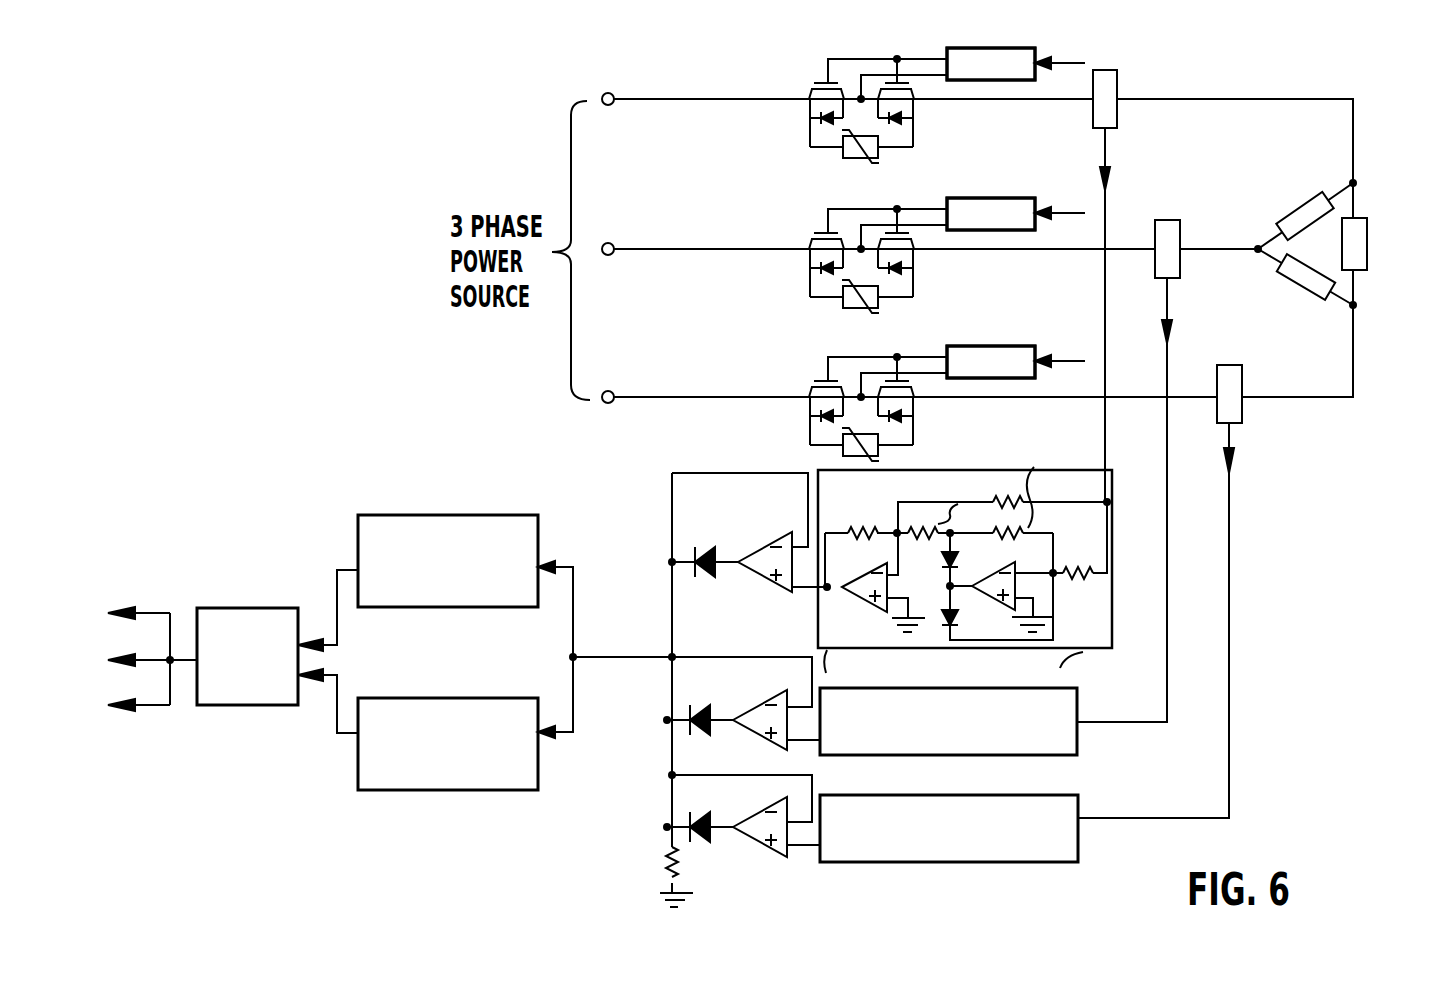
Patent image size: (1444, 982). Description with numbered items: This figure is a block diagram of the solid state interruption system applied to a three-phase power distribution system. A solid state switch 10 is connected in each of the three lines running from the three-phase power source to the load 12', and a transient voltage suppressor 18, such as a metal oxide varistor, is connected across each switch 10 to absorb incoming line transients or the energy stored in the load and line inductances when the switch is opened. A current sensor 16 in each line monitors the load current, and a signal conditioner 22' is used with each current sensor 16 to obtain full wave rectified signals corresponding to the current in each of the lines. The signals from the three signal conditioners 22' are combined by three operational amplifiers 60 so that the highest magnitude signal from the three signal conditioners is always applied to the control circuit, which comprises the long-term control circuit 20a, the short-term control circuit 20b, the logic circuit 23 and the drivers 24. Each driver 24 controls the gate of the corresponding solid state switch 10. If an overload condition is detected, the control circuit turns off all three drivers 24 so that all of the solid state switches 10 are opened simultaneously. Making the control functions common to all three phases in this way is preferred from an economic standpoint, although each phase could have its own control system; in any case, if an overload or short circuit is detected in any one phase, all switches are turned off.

The solid state switch 10 is at (797, 112).
The transient voltage suppressor 18 is at (882, 158).
The driver 24 is at (1000, 80).
The current sensor 16 is at (1117, 108).
The load 12' is at (1333, 253).
The signal conditioner 22' is at (977, 651).
The operational amplifier 60 is at (760, 573).
The logic circuit 23 is at (277, 705).
The long-term control circuit 20a is at (405, 608).
The short-term control circuit 20b is at (412, 792).